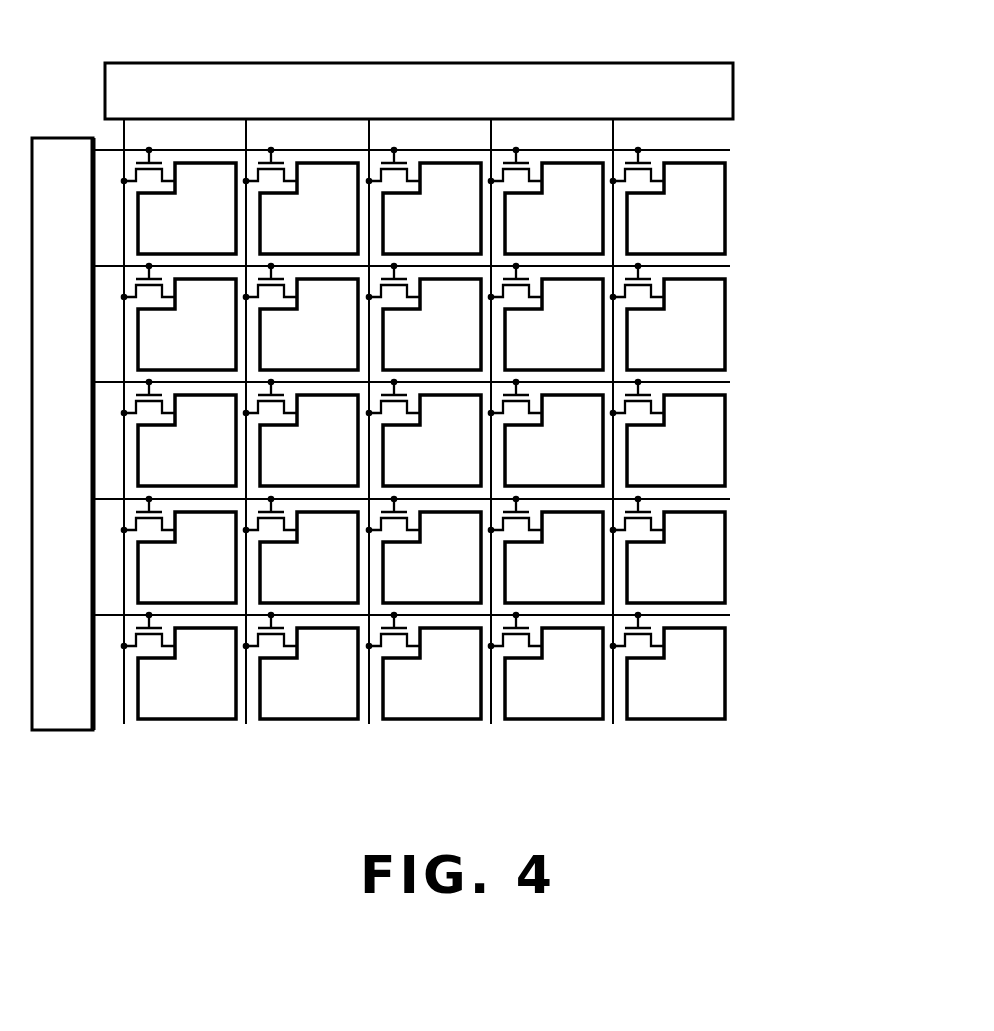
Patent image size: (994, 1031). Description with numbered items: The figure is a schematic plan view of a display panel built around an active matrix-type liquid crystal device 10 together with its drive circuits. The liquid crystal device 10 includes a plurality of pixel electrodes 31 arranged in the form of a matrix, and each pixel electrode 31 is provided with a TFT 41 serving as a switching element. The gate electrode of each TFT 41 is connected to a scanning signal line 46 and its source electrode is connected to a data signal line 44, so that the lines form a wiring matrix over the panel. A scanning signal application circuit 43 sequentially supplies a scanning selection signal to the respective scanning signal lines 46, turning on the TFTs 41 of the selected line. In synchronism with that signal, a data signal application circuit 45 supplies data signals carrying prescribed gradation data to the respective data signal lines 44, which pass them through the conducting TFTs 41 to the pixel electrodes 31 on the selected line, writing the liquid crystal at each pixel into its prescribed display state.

The liquid crystal device 10 is at (487, 362).
The pixel electrode 31 is at (707, 182).
The TFT 41 is at (637, 178).
The scanning signal application circuit 43 is at (55, 157).
The data signal line 44 is at (613, 133).
The data signal application circuit 45 is at (618, 76).
The scanning signal line 46 is at (708, 150).